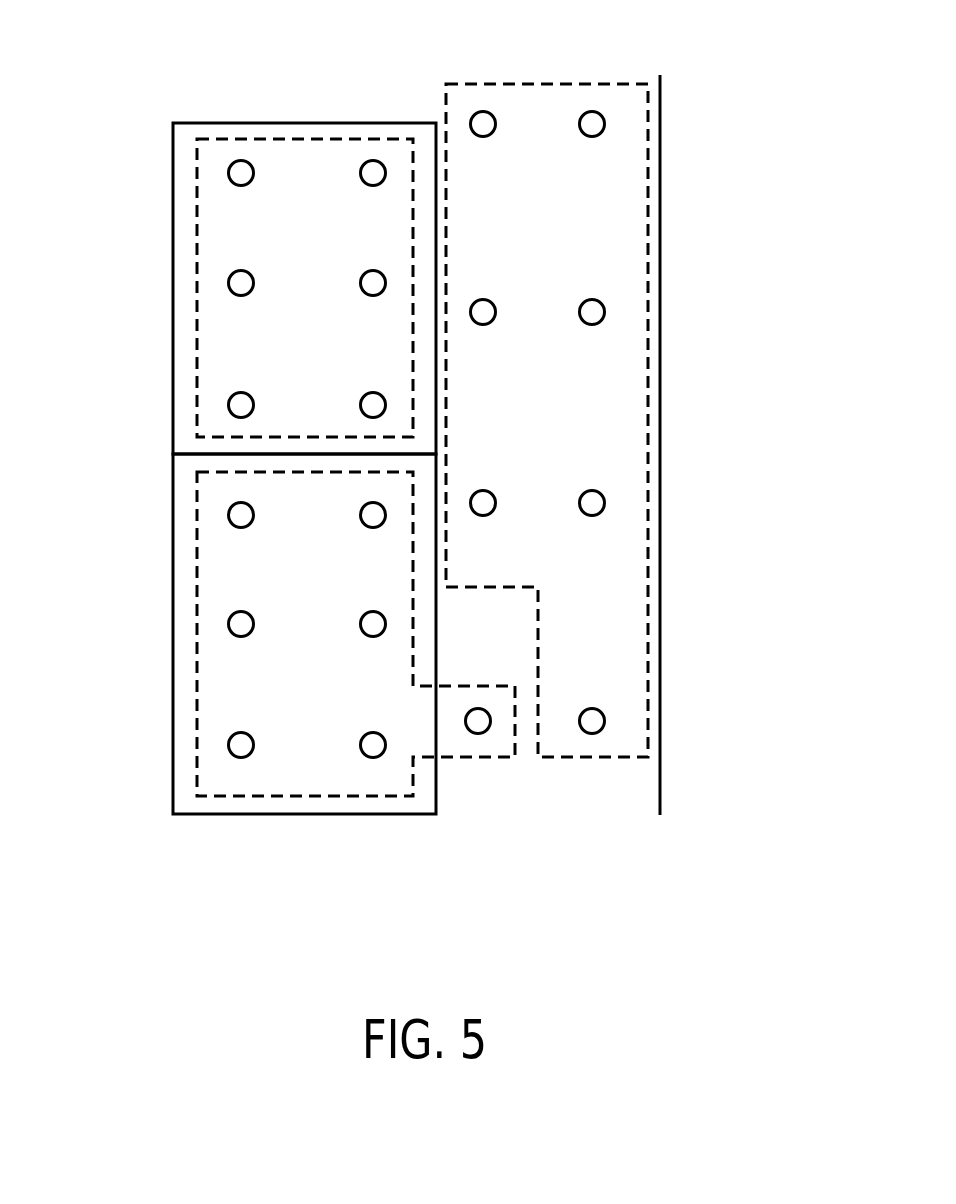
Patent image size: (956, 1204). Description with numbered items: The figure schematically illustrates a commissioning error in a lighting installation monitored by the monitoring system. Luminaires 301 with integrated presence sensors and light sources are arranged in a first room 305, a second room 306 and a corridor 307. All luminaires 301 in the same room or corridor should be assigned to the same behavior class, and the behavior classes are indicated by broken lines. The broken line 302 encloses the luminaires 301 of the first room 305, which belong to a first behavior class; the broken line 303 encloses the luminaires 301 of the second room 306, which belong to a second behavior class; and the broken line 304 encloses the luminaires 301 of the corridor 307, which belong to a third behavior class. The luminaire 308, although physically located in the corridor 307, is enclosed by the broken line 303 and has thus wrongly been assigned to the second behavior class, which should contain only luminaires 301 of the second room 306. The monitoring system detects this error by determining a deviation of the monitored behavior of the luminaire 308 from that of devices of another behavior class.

The luminaire 301 is at (224, 509).
The broken line indicating first behavior class 302 is at (339, 139).
The broken line indicating second behavior class 303 is at (222, 797).
The broken line indicating third behavior class 304 is at (602, 84).
The first room 305 is at (330, 360).
The second room 306 is at (331, 602).
The corridor 307 is at (566, 228).
The wrongly assigned luminaire 308 is at (478, 737).